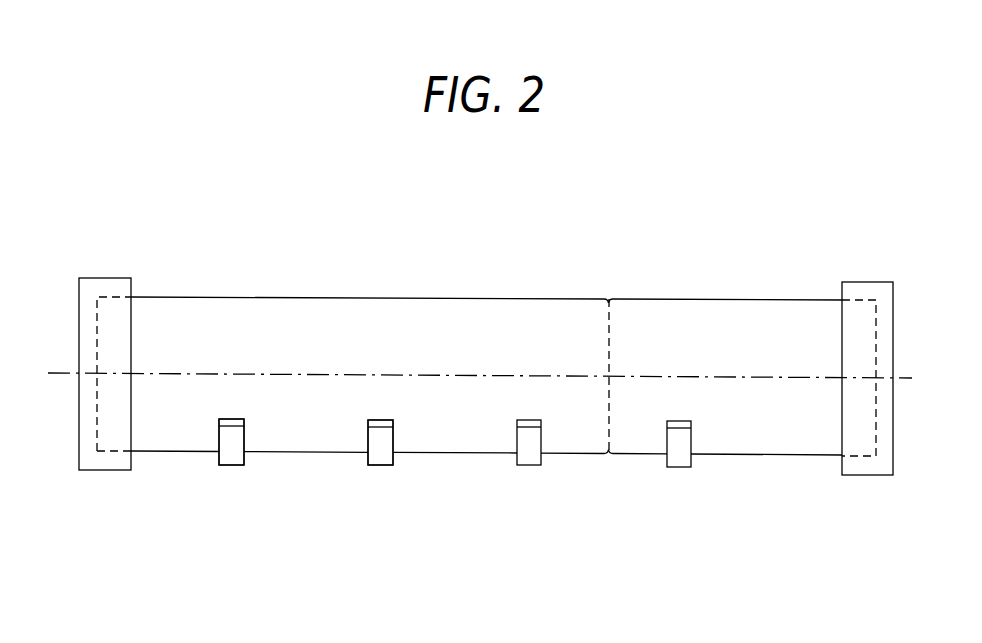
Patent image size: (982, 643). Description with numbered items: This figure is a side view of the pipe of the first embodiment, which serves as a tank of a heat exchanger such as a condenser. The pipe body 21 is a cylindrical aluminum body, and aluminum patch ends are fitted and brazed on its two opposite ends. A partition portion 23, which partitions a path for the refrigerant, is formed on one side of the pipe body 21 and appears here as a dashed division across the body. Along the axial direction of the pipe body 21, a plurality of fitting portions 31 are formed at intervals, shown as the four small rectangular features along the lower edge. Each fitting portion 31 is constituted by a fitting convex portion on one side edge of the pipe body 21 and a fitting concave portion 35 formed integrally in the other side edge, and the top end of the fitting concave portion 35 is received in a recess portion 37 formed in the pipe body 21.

The pipe body 21 is at (417, 323).
The partition portion 23 is at (612, 334).
The fitting portion 31 is at (231, 467).
The fitting concave portion 35 is at (382, 458).
The recess portion 37 is at (381, 419).